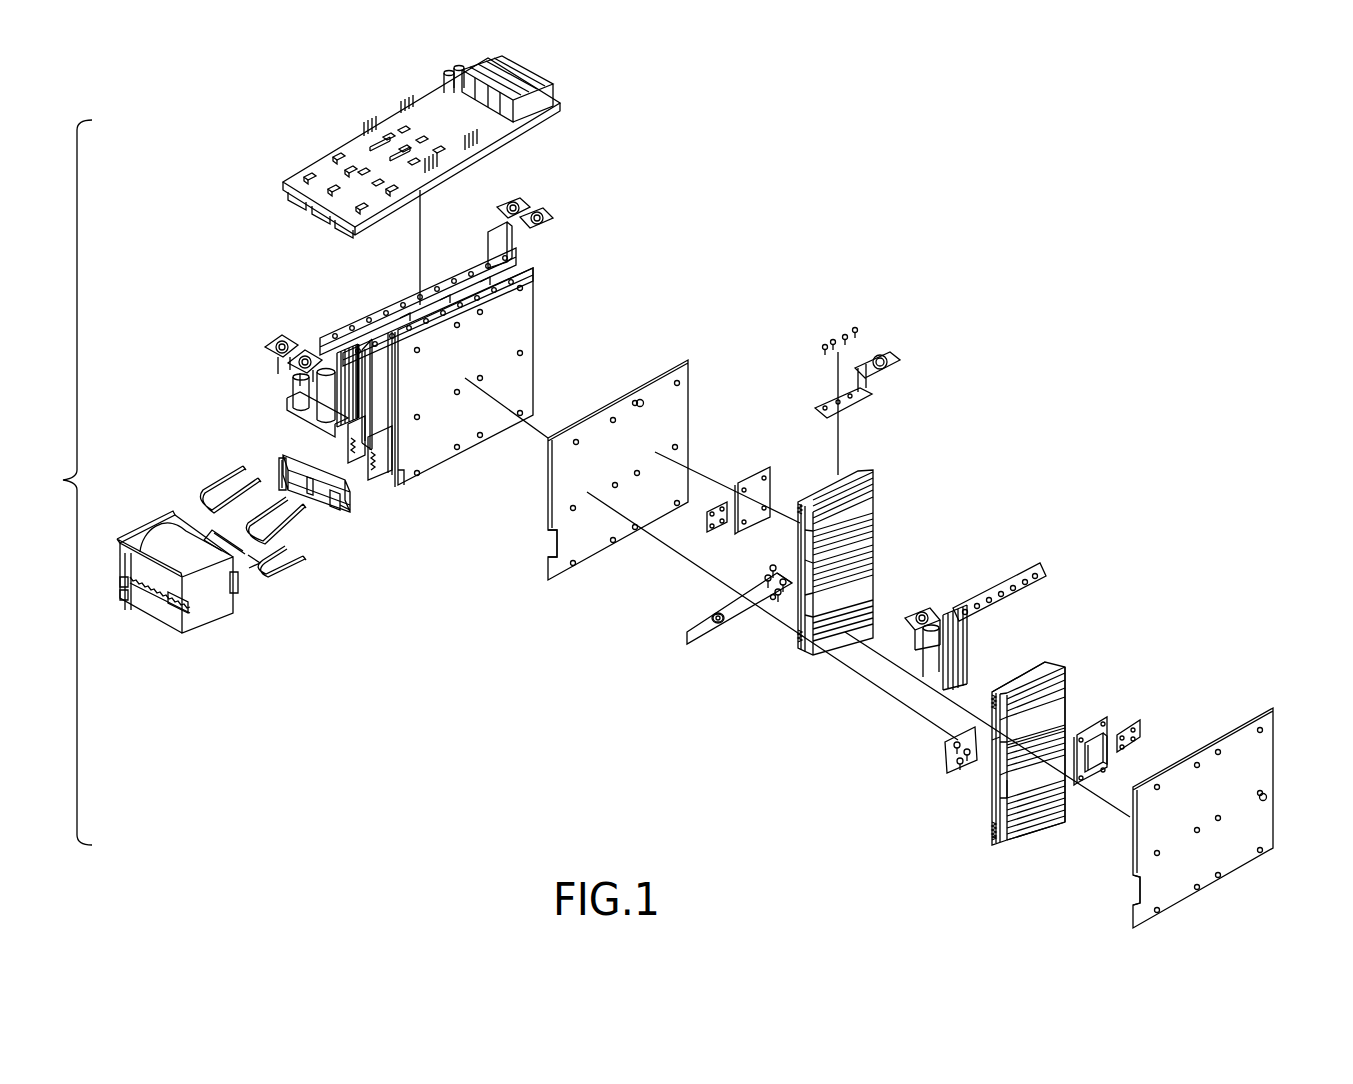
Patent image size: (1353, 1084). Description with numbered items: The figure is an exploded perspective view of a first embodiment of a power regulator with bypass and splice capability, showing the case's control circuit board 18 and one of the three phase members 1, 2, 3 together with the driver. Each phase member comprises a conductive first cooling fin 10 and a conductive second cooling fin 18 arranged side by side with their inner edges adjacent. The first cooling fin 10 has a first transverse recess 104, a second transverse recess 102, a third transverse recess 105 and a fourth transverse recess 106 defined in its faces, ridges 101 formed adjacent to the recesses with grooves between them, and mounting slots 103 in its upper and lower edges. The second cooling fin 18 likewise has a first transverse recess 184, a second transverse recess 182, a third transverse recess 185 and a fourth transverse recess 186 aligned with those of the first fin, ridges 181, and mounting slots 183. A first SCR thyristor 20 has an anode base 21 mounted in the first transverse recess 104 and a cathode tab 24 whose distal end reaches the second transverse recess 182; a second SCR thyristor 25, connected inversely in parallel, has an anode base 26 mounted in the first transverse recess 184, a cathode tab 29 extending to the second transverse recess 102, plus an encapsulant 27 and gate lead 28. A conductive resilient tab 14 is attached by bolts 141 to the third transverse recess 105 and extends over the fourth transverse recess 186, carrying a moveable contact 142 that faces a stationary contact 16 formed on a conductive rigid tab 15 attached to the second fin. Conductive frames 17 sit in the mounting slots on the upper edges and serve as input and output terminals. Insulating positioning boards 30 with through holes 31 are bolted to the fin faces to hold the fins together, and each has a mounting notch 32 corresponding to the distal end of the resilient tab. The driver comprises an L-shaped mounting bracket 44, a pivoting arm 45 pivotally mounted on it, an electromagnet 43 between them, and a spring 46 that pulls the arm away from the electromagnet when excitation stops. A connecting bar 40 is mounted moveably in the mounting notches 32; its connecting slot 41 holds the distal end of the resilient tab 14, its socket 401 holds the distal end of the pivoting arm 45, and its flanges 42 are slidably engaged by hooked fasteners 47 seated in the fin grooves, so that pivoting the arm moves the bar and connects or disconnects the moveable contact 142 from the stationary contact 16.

The phase member 1 is at (968, 435).
The phase member 2 is at (560, 298).
The phase member 3 is at (332, 318).
The first cooling fin 10 is at (848, 583).
The ridges 101 is at (867, 547).
The second transverse recess 102 is at (867, 527).
The mounting slots 103 is at (840, 483).
The first transverse recess 104 is at (812, 508).
The third transverse recess 105 is at (792, 612).
The fourth transverse recess 106 is at (858, 585).
The conductive resilient tab 14 is at (347, 430).
The bolts 141 is at (773, 597).
The moveable contact 142 is at (720, 617).
The conductive rigid tab 15 is at (909, 757).
The stationary contact 16 is at (943, 753).
The conductive frames 17 is at (490, 228).
The second cooling fin 18 is at (330, 165).
The ridges 181 is at (1063, 690).
The second transverse recess 182 is at (992, 737).
The mounting slots 183 is at (1030, 668).
The first transverse recess 184 is at (1012, 745).
The third transverse recess 185 is at (1032, 802).
The fourth transverse recess 186 is at (992, 802).
The first SCR thyristor 20 is at (744, 448).
The anode base 21 is at (763, 490).
The cathode tab 24 is at (712, 520).
The second SCR thyristor 25 is at (1144, 750).
The anode base 26 is at (1095, 773).
The encapsulant 27 is at (1097, 720).
The gate lead 28 is at (1107, 763).
The cathode tab 29 is at (1140, 723).
The positioning boards 30 is at (523, 320).
The through holes 31 is at (638, 403).
The mounting notch 32 is at (550, 547).
The connecting bar 40 is at (303, 492).
The socket 401 is at (282, 478).
The connecting slot 41 is at (350, 507).
The flanges 42 is at (283, 458).
The electromagnet 43 is at (185, 550).
The mounting bracket 44 is at (210, 607).
The pivoting arm 45 is at (157, 538).
The spring 46 is at (150, 597).
The fasteners 47 is at (282, 573).